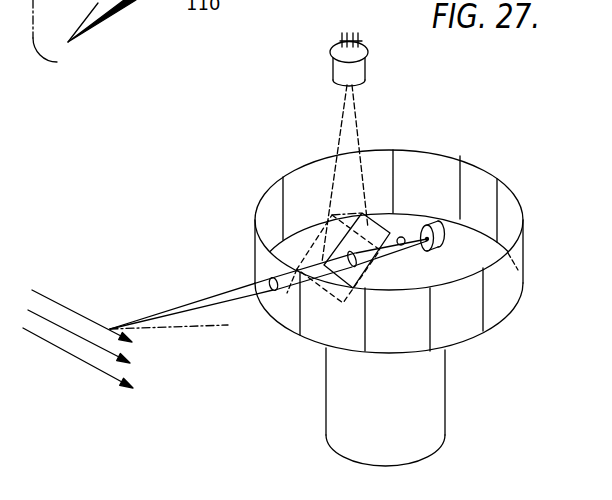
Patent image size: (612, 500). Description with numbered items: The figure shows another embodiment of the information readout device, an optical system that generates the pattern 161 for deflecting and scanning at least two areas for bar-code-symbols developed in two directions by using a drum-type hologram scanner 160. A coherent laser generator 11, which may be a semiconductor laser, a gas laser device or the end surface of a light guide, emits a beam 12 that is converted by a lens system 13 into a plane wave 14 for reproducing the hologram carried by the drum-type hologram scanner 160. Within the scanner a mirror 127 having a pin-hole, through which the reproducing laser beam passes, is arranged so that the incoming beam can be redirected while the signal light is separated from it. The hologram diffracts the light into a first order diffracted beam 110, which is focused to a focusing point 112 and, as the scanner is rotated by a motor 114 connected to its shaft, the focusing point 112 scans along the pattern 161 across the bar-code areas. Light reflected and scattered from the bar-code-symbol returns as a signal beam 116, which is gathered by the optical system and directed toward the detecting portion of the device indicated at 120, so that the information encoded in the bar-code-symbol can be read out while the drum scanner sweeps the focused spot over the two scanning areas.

The coherent laser generator 11 is at (439, 250).
The beam 12 is at (413, 237).
The lens system 13 is at (401, 247).
The plane wave 14 is at (276, 291).
The first order diffracted beam 110 is at (205, 304).
The focusing point 112 is at (68, 42).
The motor 114 is at (434, 408).
The signal beam 116 is at (220, 288).
The light source 120 is at (358, 74).
The mirror 127 is at (352, 230).
The drum-type hologram scanner 160 is at (473, 330).
The pattern 161 is at (82, 368).